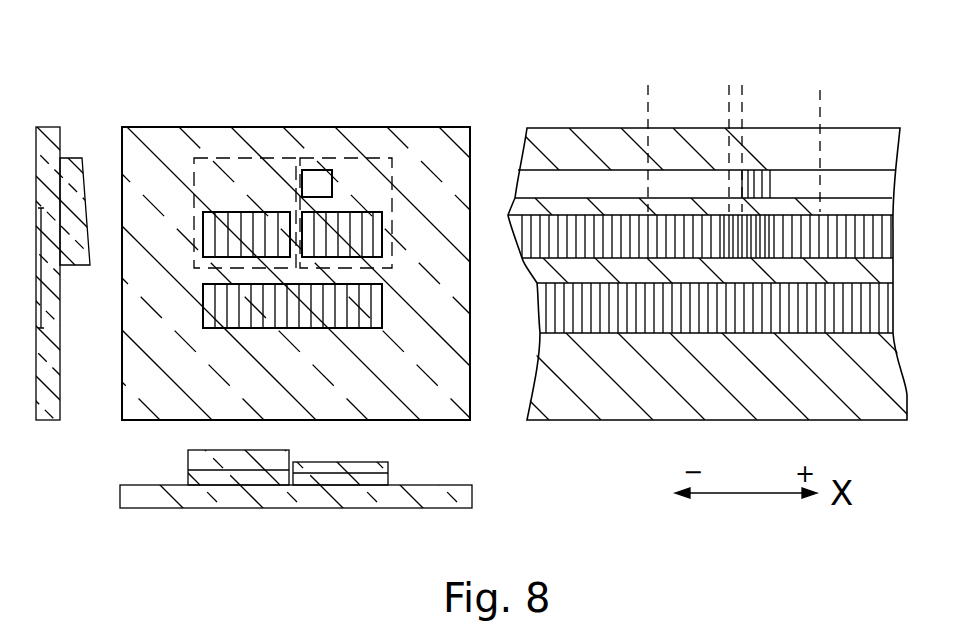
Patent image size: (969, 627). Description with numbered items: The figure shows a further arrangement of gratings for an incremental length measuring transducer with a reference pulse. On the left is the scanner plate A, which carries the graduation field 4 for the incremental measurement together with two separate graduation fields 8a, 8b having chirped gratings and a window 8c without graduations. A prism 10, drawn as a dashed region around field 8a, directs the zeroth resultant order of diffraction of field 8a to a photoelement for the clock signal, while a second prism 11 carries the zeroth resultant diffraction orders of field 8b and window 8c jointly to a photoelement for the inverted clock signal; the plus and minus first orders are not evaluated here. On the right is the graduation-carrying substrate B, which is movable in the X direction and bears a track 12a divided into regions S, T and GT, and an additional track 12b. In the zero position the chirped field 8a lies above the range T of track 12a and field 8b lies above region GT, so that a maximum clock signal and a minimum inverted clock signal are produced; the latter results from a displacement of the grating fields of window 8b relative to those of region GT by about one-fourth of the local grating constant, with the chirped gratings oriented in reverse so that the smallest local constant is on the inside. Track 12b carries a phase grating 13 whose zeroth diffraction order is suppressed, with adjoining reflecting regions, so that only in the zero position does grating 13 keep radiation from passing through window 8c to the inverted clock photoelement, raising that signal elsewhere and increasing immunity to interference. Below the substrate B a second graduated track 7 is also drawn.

The scanner plate A is at (142, 143).
The graduation-carrying substrate B is at (540, 137).
The graduation field 4 is at (233, 308).
The second track of scale 7 is at (562, 313).
The graduation field with chirped grating 8a is at (238, 224).
The graduation field with chirped grating 8b is at (342, 223).
The window 8c is at (313, 183).
The prism 10 is at (233, 160).
The prism 11 is at (390, 197).
The track 12a is at (537, 242).
The additional track 12b is at (527, 187).
The phase grating 13 is at (767, 187).